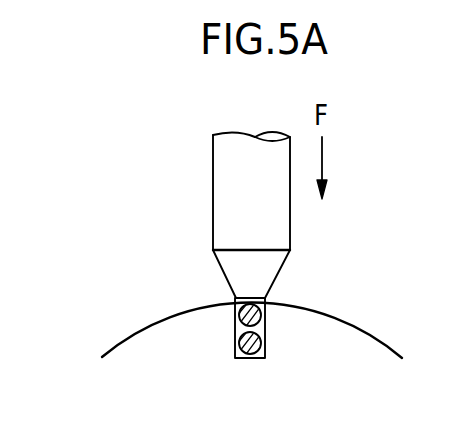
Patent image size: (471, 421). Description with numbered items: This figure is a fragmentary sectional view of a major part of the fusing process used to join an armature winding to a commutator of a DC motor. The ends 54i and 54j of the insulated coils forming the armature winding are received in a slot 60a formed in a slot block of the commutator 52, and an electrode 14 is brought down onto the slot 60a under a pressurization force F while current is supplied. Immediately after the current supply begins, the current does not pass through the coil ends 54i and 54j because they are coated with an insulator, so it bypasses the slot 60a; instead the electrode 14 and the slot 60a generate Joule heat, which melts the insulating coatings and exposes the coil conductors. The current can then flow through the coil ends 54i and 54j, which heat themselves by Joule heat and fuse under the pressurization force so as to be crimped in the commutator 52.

The electrode 14 is at (215, 188).
The commutator 52 is at (143, 337).
The coil end 54i is at (212, 306).
The coil end 54j is at (235, 347).
The slot 60a is at (265, 330).